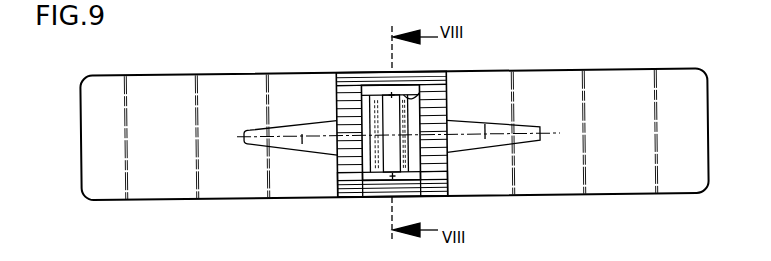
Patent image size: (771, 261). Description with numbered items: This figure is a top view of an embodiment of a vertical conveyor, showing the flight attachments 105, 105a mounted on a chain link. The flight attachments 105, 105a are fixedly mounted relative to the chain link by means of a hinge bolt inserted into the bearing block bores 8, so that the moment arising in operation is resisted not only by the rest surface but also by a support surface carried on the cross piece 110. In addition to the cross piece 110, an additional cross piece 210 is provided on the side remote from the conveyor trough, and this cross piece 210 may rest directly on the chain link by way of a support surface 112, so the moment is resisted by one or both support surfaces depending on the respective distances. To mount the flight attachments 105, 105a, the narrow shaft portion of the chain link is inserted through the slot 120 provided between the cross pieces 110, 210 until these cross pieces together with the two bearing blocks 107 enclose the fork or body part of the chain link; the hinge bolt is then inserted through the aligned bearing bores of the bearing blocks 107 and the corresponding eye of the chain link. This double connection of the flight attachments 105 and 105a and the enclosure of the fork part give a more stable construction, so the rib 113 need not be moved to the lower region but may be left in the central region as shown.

The flight attachment 105 is at (643, 83).
The flight attachment 105a is at (114, 88).
The rib 113 is at (268, 135).
The bearing block bore 8 is at (343, 100).
The additional cross piece 210 is at (353, 83).
The support surface 112 is at (421, 98).
The bearing block 107 is at (342, 173).
The slot 120 is at (392, 155).
The cross piece 110 is at (347, 197).